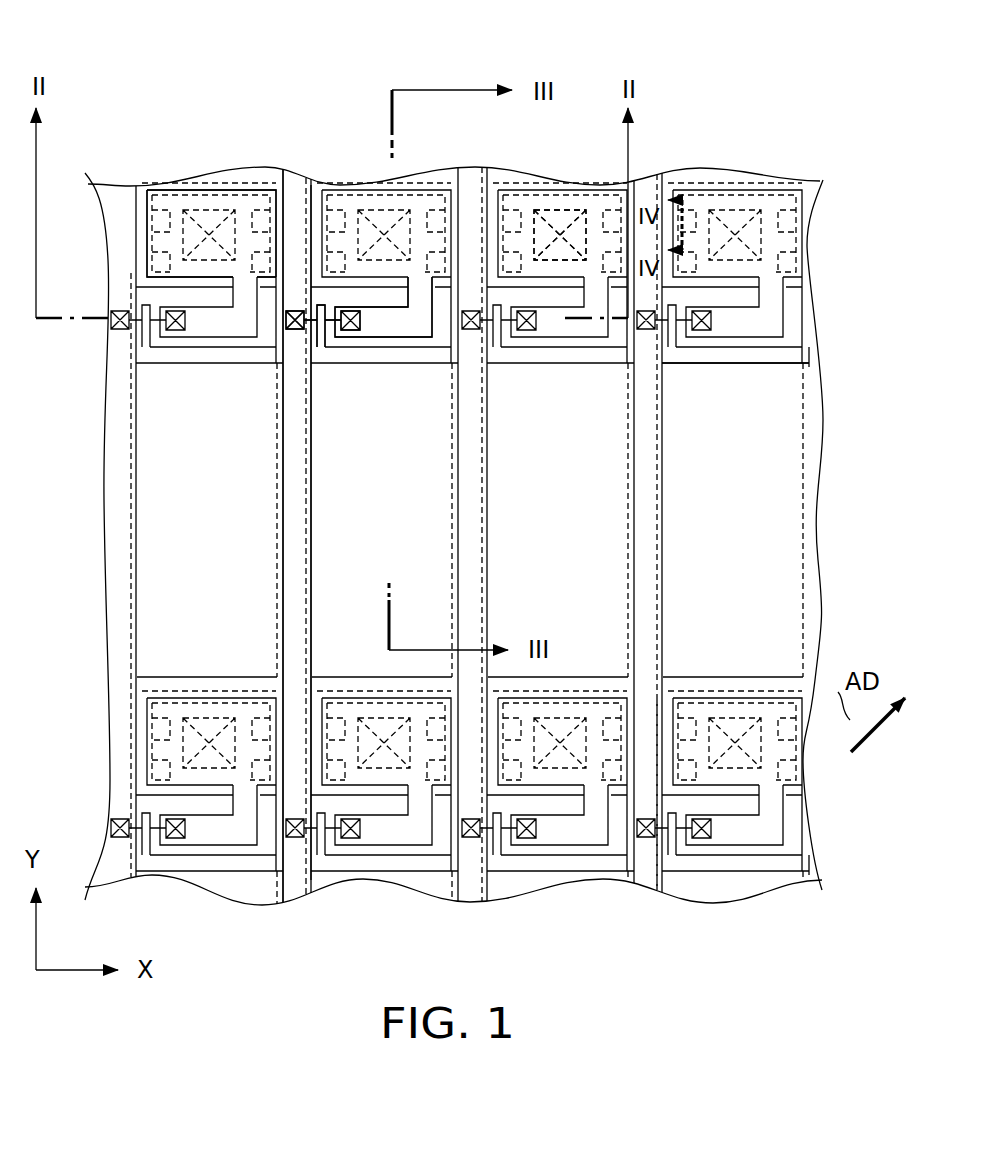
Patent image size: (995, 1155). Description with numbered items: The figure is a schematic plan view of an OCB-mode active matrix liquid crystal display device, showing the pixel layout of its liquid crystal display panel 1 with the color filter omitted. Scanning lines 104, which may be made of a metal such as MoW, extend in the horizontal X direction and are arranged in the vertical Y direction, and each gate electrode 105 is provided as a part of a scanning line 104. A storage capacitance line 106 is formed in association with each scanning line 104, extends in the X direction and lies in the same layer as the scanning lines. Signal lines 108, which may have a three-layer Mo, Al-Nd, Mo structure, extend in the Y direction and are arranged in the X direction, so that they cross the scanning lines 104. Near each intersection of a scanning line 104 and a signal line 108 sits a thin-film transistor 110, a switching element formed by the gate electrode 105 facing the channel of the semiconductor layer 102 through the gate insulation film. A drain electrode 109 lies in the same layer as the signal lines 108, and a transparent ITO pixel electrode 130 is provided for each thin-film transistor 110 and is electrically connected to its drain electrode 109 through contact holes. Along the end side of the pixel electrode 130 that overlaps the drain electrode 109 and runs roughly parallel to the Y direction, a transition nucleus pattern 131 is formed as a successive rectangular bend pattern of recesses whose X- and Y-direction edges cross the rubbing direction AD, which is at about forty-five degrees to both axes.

The liquid crystal display panel 1 is at (760, 130).
The semiconductor layer 102 is at (333, 322).
The scanning line 104 is at (762, 363).
The gate electrode 105 is at (308, 333).
The storage capacitance line 106 is at (143, 188).
The signal line 108 is at (646, 857).
The drain electrode 109 is at (412, 325).
The thin-film transistor 110 is at (312, 285).
The pixel electrode 130 is at (255, 513).
The transition nucleus pattern 131 is at (521, 238).